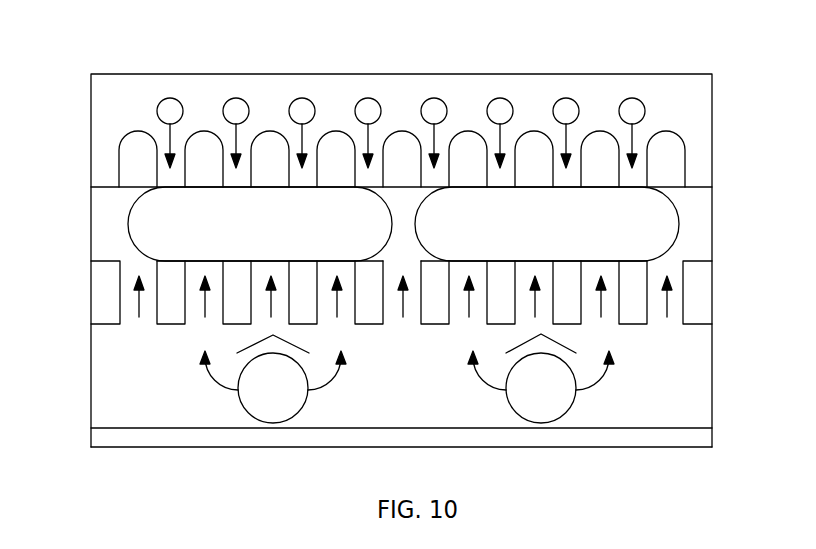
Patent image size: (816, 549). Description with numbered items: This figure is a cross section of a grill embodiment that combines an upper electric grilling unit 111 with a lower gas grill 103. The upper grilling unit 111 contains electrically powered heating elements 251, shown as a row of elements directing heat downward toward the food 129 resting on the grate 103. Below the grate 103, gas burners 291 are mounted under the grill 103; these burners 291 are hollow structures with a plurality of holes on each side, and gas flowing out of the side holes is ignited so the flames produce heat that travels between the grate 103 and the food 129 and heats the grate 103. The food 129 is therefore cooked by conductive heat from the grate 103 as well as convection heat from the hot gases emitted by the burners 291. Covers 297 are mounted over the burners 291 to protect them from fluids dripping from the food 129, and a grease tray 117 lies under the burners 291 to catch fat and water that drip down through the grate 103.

The upper electric grilling unit 111 is at (469, 83).
The lower gas grill 103 is at (440, 321).
The grease tray 117 is at (618, 436).
The food 129 is at (137, 223).
The electrically powered heating elements 251 is at (226, 110).
The gas burners 291 is at (240, 403).
The covers 297 is at (242, 352).